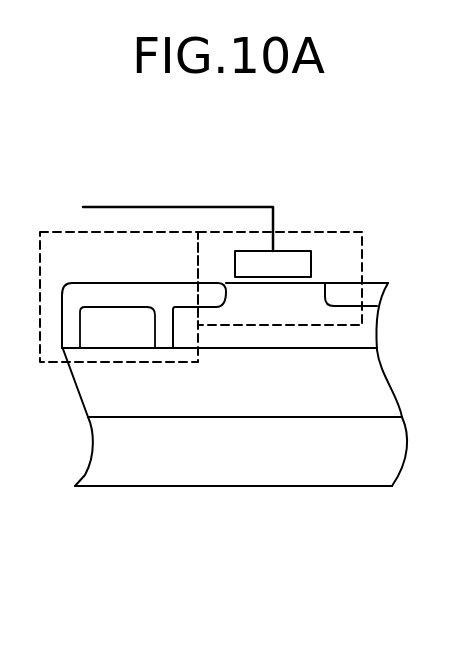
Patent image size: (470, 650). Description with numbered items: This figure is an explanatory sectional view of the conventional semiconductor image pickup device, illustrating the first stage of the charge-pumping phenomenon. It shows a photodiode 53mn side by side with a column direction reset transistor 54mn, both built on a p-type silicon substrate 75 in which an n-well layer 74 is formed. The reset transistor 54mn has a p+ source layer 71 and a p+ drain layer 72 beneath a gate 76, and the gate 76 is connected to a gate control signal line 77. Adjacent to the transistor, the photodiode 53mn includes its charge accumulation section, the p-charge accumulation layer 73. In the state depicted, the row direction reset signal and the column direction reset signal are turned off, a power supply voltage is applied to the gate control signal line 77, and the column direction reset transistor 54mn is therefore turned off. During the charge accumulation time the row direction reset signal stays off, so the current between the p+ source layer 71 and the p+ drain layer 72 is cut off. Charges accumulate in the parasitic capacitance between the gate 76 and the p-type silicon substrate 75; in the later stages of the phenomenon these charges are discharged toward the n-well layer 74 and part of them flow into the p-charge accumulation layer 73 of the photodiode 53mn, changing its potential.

The photodiode 53mn is at (58, 231).
The column direction reset transistor 54mn is at (345, 231).
The p+ source layer 71 is at (229, 291).
The p+ drain layer 72 is at (365, 283).
The charge accumulation section (p-charge accumulation layer) 73 is at (99, 337).
The n-well layer 74 is at (368, 370).
The p-type silicon substrate 75 is at (243, 468).
The gate 76 is at (293, 268).
The gate control signal line 77 is at (152, 207).